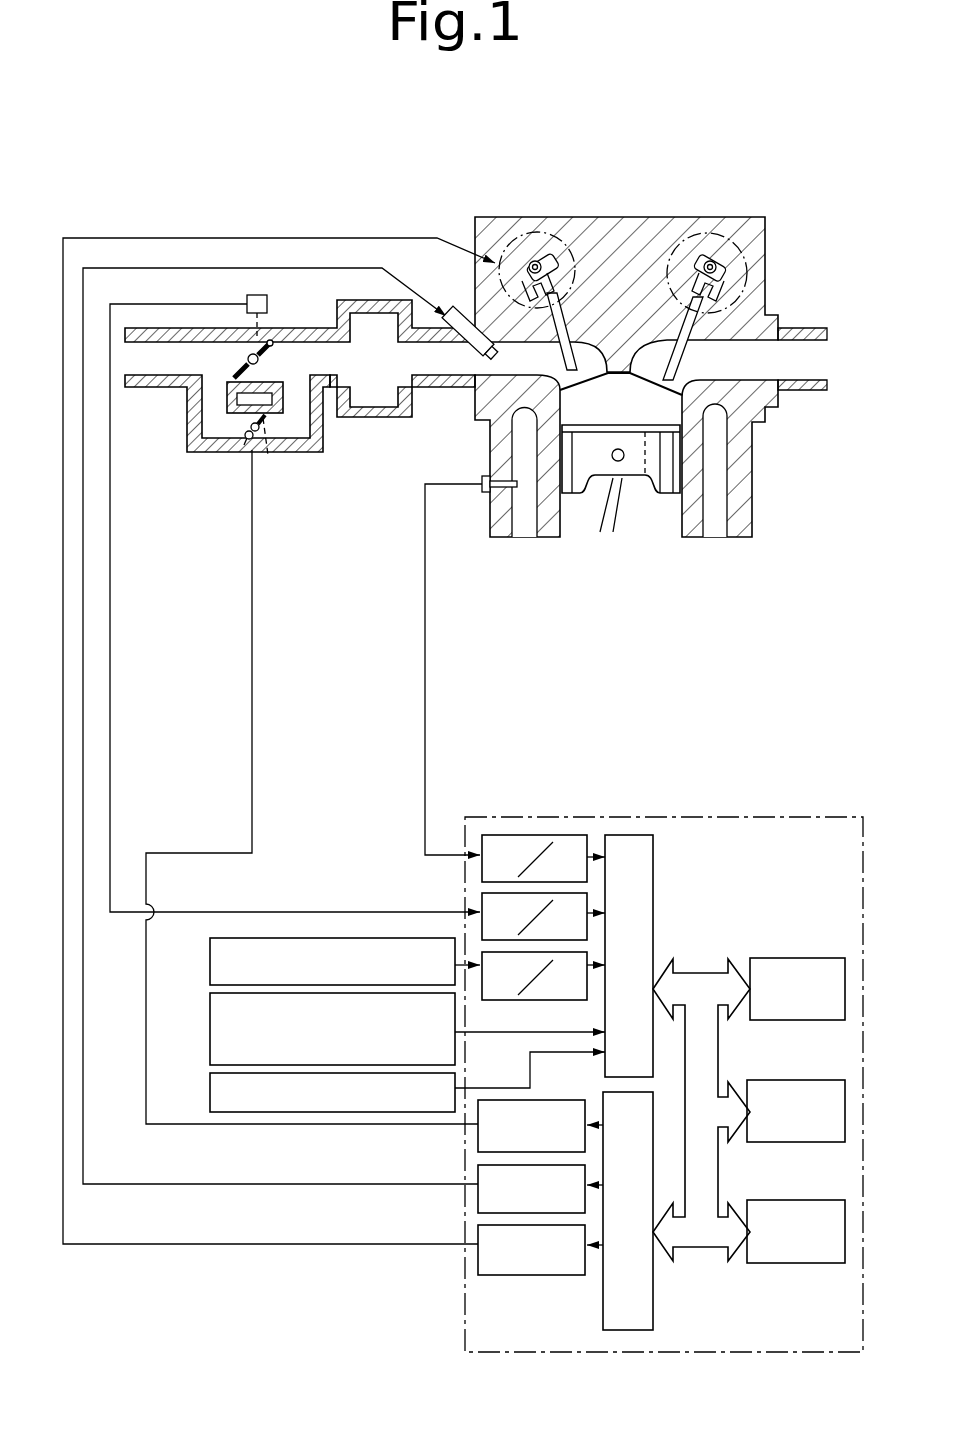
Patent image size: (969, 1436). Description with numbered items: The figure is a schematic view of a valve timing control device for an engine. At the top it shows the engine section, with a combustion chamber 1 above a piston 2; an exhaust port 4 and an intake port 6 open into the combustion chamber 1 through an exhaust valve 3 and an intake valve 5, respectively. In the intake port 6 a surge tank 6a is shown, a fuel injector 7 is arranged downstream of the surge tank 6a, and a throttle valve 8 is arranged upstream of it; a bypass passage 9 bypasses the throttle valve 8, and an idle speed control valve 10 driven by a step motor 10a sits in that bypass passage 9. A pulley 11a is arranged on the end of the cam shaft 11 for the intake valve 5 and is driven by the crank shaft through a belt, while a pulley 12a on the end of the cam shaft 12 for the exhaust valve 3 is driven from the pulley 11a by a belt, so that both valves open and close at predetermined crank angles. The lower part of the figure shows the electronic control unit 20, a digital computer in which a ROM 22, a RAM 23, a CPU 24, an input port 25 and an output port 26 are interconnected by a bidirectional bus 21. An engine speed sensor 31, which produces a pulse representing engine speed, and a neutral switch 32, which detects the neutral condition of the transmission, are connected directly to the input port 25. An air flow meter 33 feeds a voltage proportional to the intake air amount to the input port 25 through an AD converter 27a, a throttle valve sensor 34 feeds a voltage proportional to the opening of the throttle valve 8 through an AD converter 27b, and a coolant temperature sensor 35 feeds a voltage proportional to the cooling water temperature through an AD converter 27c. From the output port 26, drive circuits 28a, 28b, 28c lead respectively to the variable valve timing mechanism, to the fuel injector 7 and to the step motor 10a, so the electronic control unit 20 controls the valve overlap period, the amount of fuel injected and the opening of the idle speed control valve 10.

The combustion chamber 1 is at (653, 407).
The piston 2 is at (657, 467).
The exhaust valve 3 is at (767, 405).
The exhaust port 4 is at (800, 353).
The intake valve 5 is at (593, 370).
The intake port 6 is at (443, 362).
The surge tank 6a is at (373, 322).
The fuel injector 7 is at (447, 312).
The throttle valve 8 is at (270, 350).
The bypass passage 9 is at (292, 430).
The idle speed control valve 10 is at (247, 427).
The step motor 10a is at (268, 455).
The cam shaft 11 is at (550, 257).
The pulley 11a is at (538, 230).
The cam shaft 12 is at (707, 258).
The pulley 12a is at (722, 225).
The electronic control unit 20 is at (757, 813).
The bidirectional bus 21 is at (702, 973).
The ROM 22 is at (812, 957).
The RAM 23 is at (815, 1078).
The CPU 24 is at (815, 1198).
The input port 25 is at (657, 877).
The output port 26 is at (657, 1300).
The AD converter 27a is at (540, 1003).
The AD converter 27b is at (477, 900).
The AD converter 27c is at (515, 835).
The drive circuit 28a is at (477, 1258).
The drive circuit 28b is at (477, 1200).
The drive circuit 28c is at (477, 1140).
The engine speed sensor 31 is at (210, 1020).
The neutral switch 32 is at (210, 1090).
The air flow meter 33 is at (210, 957).
The throttle valve sensor 34 is at (257, 293).
The coolant temperature sensor 35 is at (487, 493).